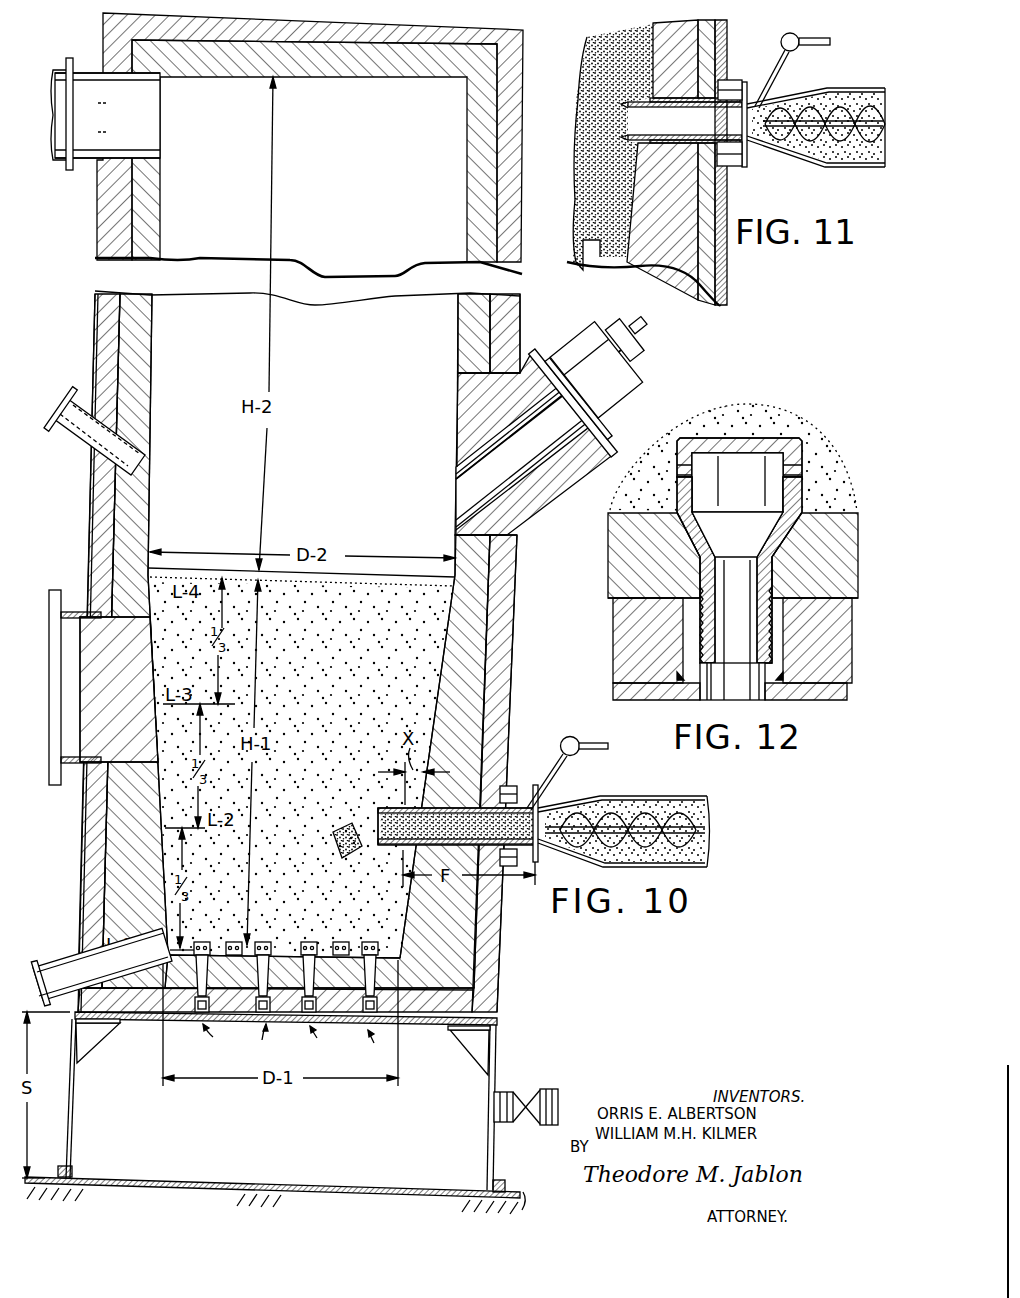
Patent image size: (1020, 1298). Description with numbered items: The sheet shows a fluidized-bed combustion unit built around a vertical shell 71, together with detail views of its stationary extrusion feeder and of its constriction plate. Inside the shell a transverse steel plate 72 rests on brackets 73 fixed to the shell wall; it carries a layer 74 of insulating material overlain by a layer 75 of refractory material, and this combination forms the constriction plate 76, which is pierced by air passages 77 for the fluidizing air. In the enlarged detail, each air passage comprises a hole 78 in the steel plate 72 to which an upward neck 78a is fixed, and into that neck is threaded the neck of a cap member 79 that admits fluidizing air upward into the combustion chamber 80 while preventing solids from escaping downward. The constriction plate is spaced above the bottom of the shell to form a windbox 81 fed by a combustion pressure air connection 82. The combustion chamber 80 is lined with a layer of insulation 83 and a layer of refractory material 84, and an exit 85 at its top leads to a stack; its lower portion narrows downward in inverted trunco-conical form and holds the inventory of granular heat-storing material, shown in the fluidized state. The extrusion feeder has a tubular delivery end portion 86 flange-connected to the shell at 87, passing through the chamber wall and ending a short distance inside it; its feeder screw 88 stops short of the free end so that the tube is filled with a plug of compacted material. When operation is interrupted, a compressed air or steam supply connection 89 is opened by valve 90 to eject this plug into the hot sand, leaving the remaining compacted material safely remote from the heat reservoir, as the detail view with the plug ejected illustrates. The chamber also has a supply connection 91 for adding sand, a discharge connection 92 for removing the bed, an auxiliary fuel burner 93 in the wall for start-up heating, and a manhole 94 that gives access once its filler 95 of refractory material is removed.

In FIG. 10, the vertical shell 71 is at (518, 642).
In FIG. 10, the transverse steel plate 72 is at (418, 1028).
In FIG. 12, the transverse steel plate 72 is at (633, 688).
In FIG. 10, the brackets 73 is at (102, 1032).
In FIG. 10, the layer of insulating material 74 is at (152, 1002).
In FIG. 10, the layer of refractory material 75 is at (188, 948).
In FIG. 10, the constriction plate 76 is at (283, 953).
In FIG. 10, the air passages 77 is at (348, 1005).
In FIG. 12, the holes 78 is at (750, 698).
In FIG. 12, the upward neck 78a is at (777, 657).
In FIG. 12, the cap member 79 is at (797, 455).
In FIG. 10, the combustion chamber 80 is at (415, 533).
In FIG. 10, the windbox 81 is at (316, 1123).
In FIG. 10, the combustion pressure air connection 82 is at (512, 1091).
In FIG. 10, the layer of insulation 83 is at (95, 540).
In FIG. 10, the layer of refractory material 84 is at (140, 531).
In FIG. 10, the exit 85 is at (97, 72).
In FIG. 10, the tubular delivery end portion 86 is at (403, 808).
In FIG. 11, the tubular delivery end portion 86 is at (628, 104).
In FIG. 10, the flange connection 87 is at (511, 787).
In FIG. 11, the flange connection 87 is at (732, 167).
In FIG. 10, the feeder screw 88 is at (637, 827).
In FIG. 11, the feeder screw 88 is at (806, 128).
In FIG. 10, the compressed air or steam supply connection 89 is at (597, 744).
In FIG. 11, the compressed air or steam supply connection 89 is at (813, 48).
In FIG. 10, the valve 90 is at (567, 736).
In FIG. 11, the valve 90 is at (781, 34).
In FIG. 10, the supply connection 91 is at (72, 400).
In FIG. 10, the discharge connection 92 is at (48, 962).
In FIG. 10, the auxiliary fuel burner 93 is at (620, 416).
In FIG. 10, the manhole 94 is at (75, 598).
In FIG. 10, the filler of refractory material 95 is at (123, 703).